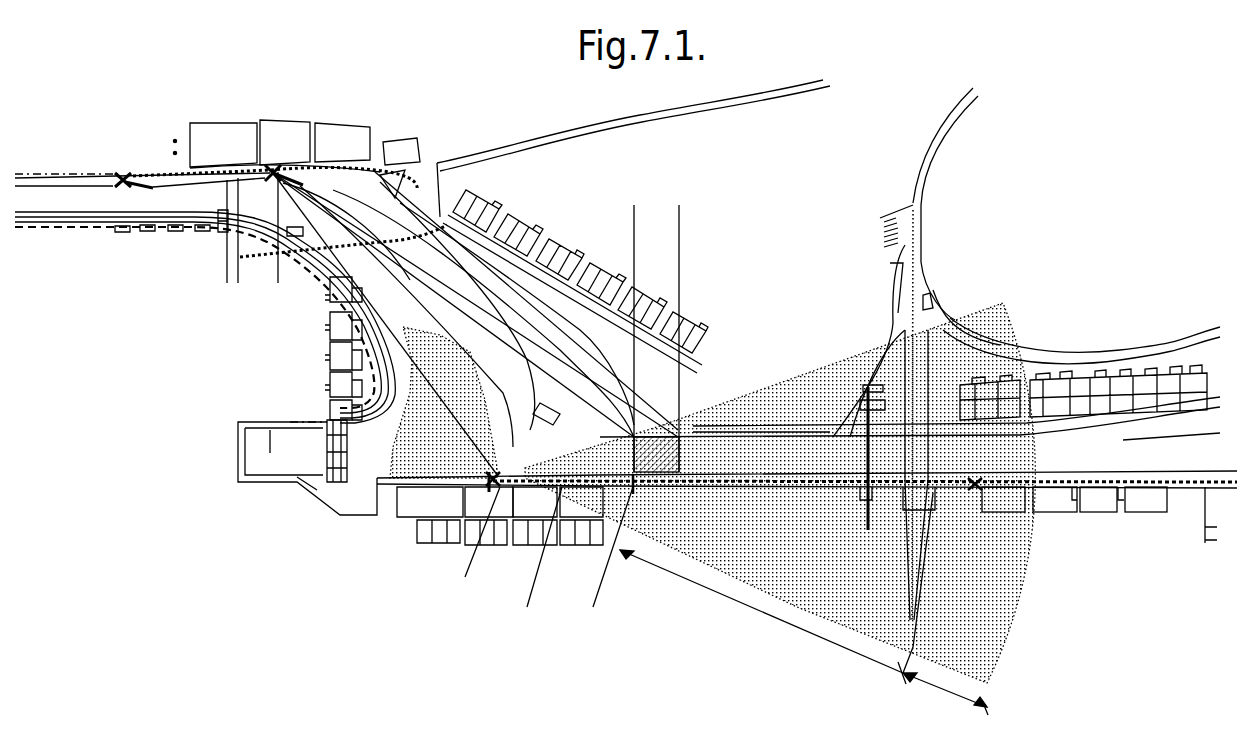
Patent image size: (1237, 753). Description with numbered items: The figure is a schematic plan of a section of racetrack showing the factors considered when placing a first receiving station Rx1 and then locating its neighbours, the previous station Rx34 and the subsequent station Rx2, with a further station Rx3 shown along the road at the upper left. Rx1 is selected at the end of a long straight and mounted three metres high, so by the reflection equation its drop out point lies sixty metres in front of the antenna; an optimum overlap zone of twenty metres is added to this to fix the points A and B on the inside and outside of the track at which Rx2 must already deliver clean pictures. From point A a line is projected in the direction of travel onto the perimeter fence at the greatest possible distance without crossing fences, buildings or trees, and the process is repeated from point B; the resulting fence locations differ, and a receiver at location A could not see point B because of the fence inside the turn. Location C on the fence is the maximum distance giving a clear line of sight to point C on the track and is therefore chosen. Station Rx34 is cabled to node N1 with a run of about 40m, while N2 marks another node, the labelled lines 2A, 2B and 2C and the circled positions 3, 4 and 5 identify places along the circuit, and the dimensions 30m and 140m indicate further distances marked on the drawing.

The receiver 3 (Rx3) location Rx3 is at (117, 178).
The subsequent receiving station Rx2 is at (276, 170).
The first receiving station Rx1 is at (490, 490).
The previous receiving station Rx34 is at (980, 493).
The Node 1 N1 is at (881, 457).
The node 2 N2 is at (304, 406).
The section line 2A is at (215, 247).
The section line 2B is at (247, 246).
The section line 2C is at (280, 243).
The pick up point on the inside of the track A is at (270, 177).
The pick up point on the outside of the track B is at (273, 173).
The receiver location on the perimeter fence C is at (273, 173).
The zone 3 is at (203, 195).
The zone 4 is at (953, 453).
The zone 5 is at (542, 450).
The 30 metre distance 30m is at (540, 600).
The 140 metre distance 140m is at (800, 627).
The cable run 40m is at (975, 703).